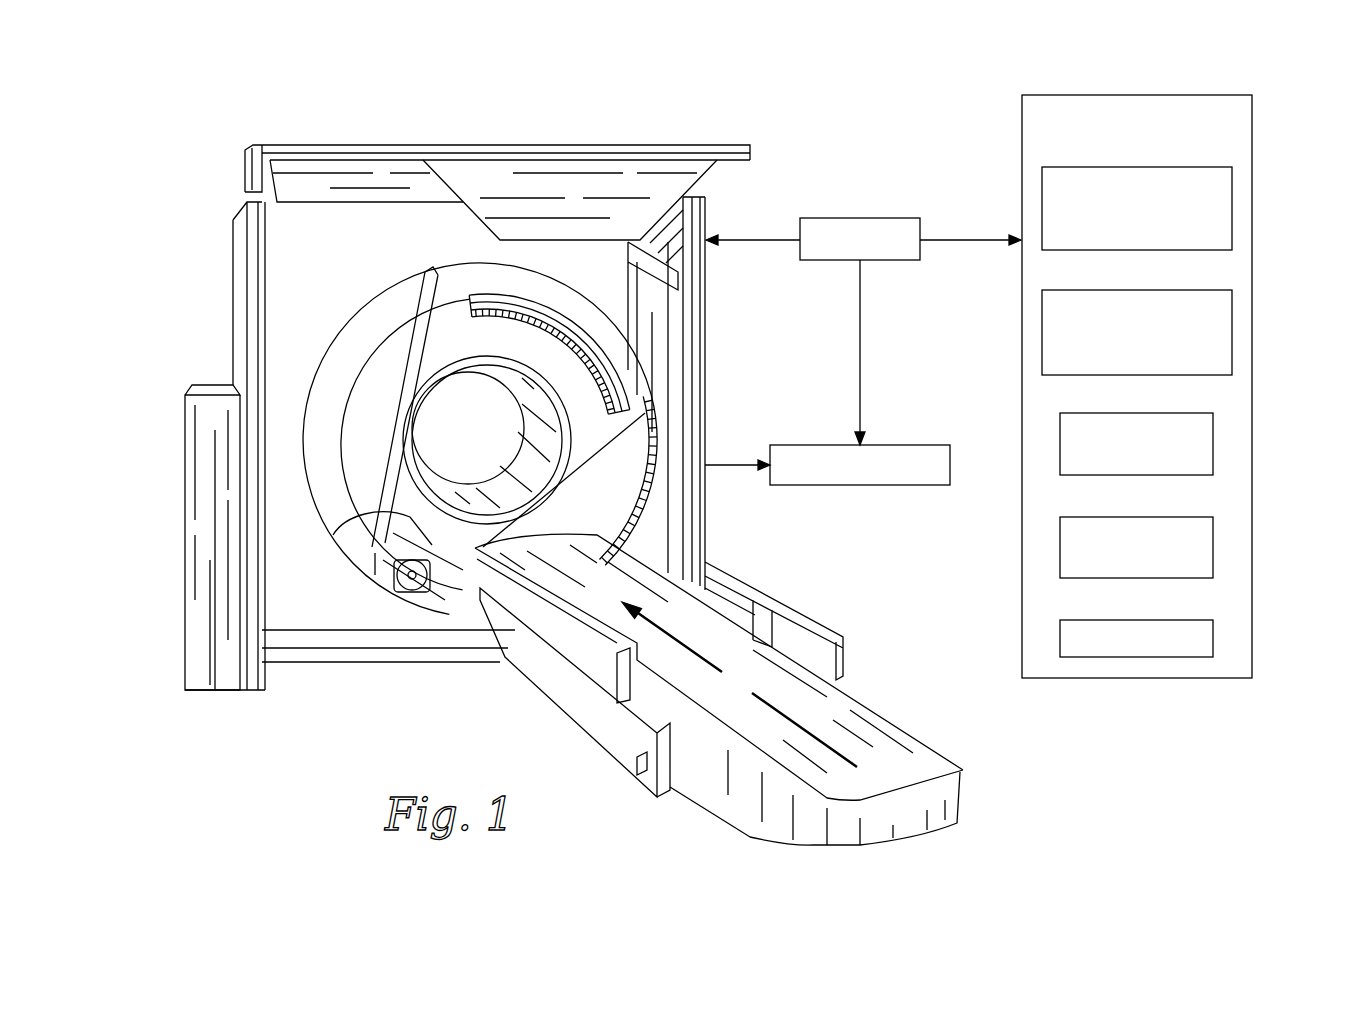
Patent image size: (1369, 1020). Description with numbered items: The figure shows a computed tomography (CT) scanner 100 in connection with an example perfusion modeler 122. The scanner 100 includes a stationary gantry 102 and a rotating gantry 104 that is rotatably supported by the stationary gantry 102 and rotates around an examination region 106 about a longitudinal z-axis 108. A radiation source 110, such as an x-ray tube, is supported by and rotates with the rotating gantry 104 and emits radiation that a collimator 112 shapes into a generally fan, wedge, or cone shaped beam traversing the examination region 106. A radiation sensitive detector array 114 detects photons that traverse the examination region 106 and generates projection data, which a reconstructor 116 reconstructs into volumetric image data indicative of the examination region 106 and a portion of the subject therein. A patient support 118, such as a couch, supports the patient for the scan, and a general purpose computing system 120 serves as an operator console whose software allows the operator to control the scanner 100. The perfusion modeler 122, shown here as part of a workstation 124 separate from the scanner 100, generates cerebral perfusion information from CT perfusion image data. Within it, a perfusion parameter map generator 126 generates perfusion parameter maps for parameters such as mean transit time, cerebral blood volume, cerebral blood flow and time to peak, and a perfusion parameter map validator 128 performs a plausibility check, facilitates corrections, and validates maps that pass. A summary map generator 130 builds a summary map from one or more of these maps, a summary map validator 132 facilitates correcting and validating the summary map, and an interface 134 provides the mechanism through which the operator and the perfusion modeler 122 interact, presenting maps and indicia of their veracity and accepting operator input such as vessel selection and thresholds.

The computed tomography (CT) scanner 100 is at (207, 143).
The stationary gantry 102 is at (230, 283).
The rotating gantry 104 is at (467, 337).
The examination region 106 is at (450, 442).
The z-axis 108 is at (773, 707).
The radiation source 110 is at (410, 612).
The collimator 112 is at (390, 518).
The radiation sensitive detector array 114 is at (607, 367).
The reconstructor 116 is at (893, 445).
The patient support 118 is at (870, 735).
The general purpose computing system 120 is at (863, 218).
The perfusion modeler 122 is at (1253, 228).
The workstation 124 is at (988, 90).
The perfusion parameter map generator 126 is at (1140, 167).
The perfusion parameter map validator 128 is at (1140, 291).
The summary map generator 130 is at (1140, 414).
The summary map validator 132 is at (1140, 518).
The interface 134 is at (1140, 621).